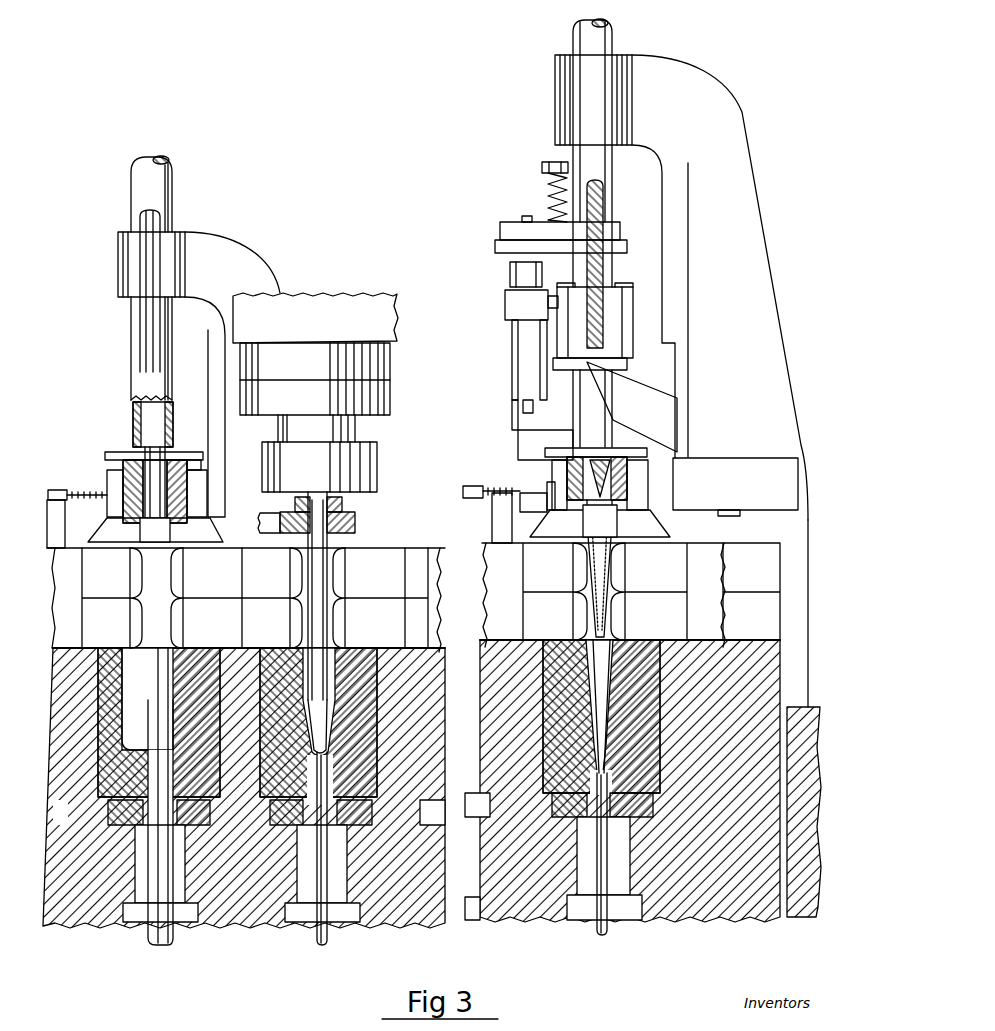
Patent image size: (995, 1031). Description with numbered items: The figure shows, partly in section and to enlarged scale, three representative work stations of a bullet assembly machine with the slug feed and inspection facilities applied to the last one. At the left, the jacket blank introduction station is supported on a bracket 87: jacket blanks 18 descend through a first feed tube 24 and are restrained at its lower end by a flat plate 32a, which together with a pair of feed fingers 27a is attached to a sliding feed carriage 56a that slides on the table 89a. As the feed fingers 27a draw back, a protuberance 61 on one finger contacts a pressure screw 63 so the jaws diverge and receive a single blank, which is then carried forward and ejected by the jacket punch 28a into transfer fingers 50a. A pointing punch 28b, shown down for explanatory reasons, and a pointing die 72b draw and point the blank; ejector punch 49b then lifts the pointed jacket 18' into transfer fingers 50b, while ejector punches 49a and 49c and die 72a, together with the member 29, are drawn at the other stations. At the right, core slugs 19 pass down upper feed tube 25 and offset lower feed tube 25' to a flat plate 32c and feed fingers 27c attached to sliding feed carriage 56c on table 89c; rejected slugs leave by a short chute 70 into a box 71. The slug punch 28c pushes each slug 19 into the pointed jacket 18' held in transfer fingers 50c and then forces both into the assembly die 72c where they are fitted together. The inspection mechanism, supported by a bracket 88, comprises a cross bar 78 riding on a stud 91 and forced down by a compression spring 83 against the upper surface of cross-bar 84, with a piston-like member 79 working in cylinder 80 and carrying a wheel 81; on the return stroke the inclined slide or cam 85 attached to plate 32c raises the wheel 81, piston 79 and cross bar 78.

The first feed tube 24 is at (170, 165).
The bracket 87 is at (240, 253).
The cylinder head 29 is at (306, 305).
The jacket punch 28a is at (148, 348).
The flat plate 32a is at (118, 452).
The jacket blank 18 is at (178, 480).
The pressure screw 63 is at (47, 495).
The feed fingers 27a is at (130, 490).
The sliding feed carriage 56a is at (205, 535).
The pointing punch 28b is at (330, 542).
The table 89a is at (77, 528).
The transfer fingers 50a is at (176, 616).
The transfer fingers 50b is at (336, 612).
The pointed jacket blank 18' is at (491, 636).
The die insert 72a is at (197, 825).
The pointing die 72b is at (352, 813).
The ejector pin 49a is at (160, 945).
The ejector punch 49b is at (322, 945).
The second feed tube 25 is at (574, 153).
The bracket 88 is at (570, 77).
The stud 91 is at (542, 170).
The compression spring 83 is at (550, 195).
The piston-like member 79 is at (522, 220).
The cross bar 78 is at (510, 236).
The cross-bar 84 is at (510, 250).
The cylinder 80 is at (520, 274).
The slug punch 28c is at (600, 198).
The wheel 81 is at (523, 407).
The inclined slide or cam 85 is at (518, 438).
The lower feed tube 25' is at (592, 365).
The core slug 19 is at (600, 455).
The chute 70 is at (678, 408).
The flat plate 32c is at (645, 452).
The box 71 is at (748, 470).
The feed fingers 27c is at (627, 476).
The protuberance 61 is at (546, 500).
The table 89c is at (512, 528).
The sliding feed carriage 56c is at (650, 525).
The transfer fingers 50c is at (620, 615).
The assembly die 72c is at (632, 777).
The ejector pin 49c is at (605, 938).